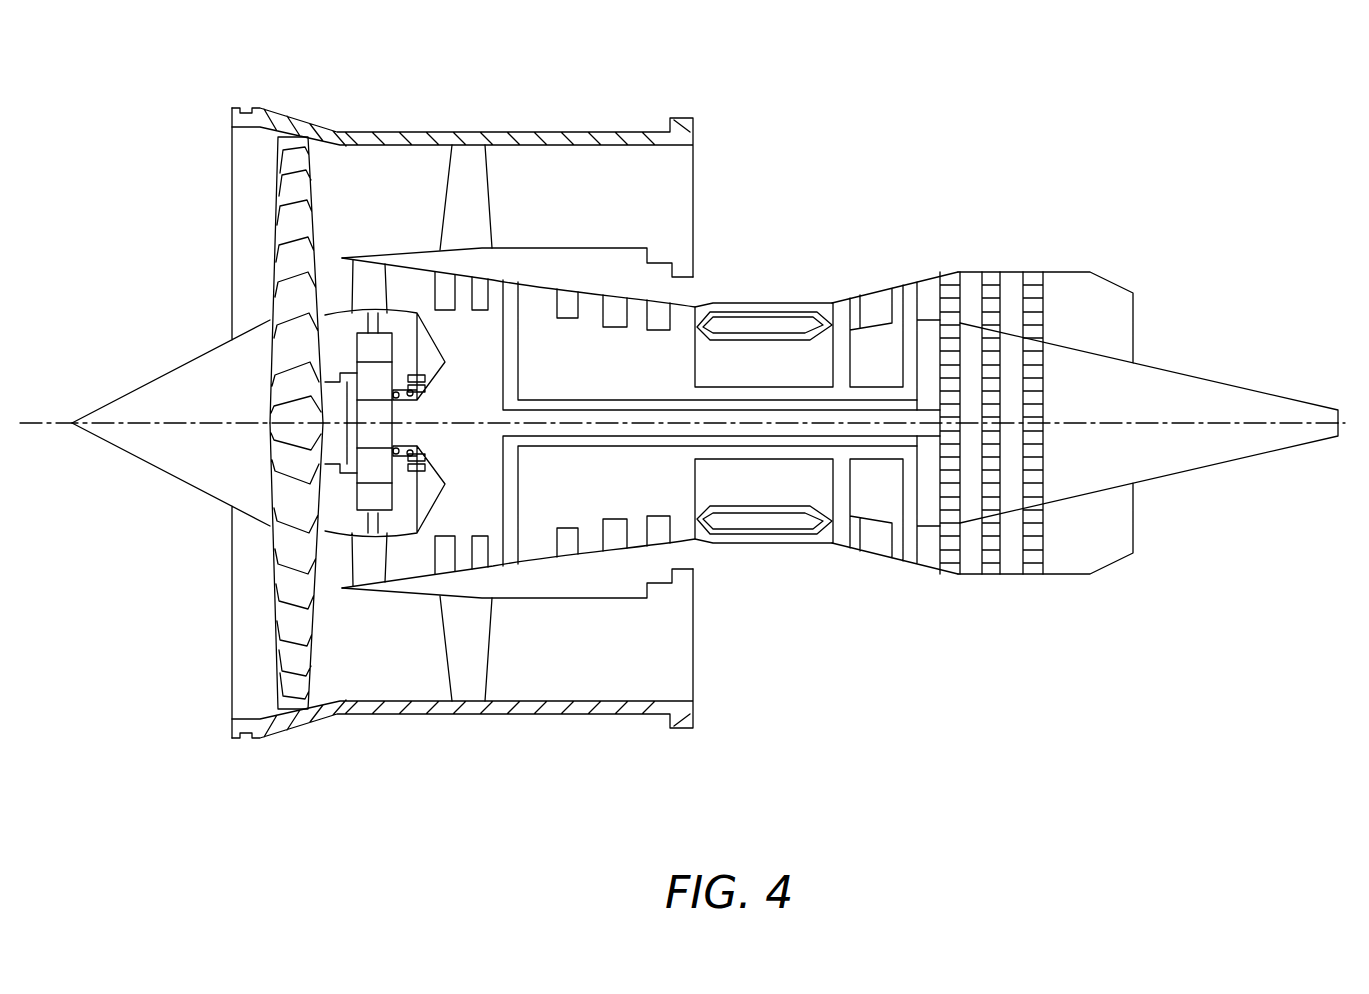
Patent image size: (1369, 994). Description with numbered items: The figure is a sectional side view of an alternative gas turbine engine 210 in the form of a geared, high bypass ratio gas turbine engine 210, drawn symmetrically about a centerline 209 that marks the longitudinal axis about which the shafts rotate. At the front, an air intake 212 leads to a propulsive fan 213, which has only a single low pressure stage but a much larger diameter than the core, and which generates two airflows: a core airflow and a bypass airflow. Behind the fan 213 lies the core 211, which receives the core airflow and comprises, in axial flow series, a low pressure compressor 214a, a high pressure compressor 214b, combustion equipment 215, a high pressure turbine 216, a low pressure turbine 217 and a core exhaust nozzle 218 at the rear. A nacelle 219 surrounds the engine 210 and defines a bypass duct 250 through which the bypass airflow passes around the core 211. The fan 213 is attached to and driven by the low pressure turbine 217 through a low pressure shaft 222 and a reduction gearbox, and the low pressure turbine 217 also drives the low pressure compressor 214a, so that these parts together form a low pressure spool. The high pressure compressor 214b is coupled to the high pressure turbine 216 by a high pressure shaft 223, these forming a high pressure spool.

The centerline axis 209 is at (38, 423).
The gas turbine engine 210 is at (1240, 152).
The core 211 is at (635, 556).
The air intake 212 is at (195, 178).
The propulsive fan 213 is at (296, 620).
The low pressure compressor 214a is at (462, 280).
The high pressure compressor 214b is at (682, 352).
The combustion equipment 215 is at (790, 525).
The high pressure turbine 216 is at (908, 300).
The low pressure turbine 217 is at (988, 287).
The core exhaust nozzle 218 is at (1122, 323).
The nacelle 219 is at (530, 132).
The low pressure shaft 222 is at (566, 428).
The high pressure shaft 223 is at (787, 385).
The bypass duct 250 is at (672, 174).